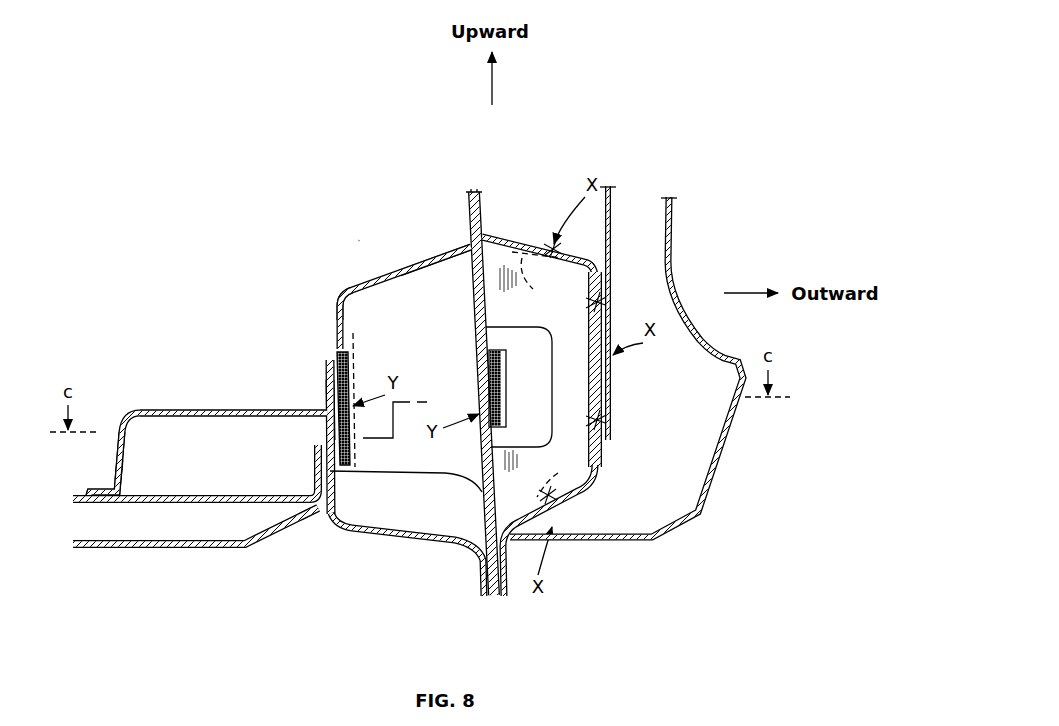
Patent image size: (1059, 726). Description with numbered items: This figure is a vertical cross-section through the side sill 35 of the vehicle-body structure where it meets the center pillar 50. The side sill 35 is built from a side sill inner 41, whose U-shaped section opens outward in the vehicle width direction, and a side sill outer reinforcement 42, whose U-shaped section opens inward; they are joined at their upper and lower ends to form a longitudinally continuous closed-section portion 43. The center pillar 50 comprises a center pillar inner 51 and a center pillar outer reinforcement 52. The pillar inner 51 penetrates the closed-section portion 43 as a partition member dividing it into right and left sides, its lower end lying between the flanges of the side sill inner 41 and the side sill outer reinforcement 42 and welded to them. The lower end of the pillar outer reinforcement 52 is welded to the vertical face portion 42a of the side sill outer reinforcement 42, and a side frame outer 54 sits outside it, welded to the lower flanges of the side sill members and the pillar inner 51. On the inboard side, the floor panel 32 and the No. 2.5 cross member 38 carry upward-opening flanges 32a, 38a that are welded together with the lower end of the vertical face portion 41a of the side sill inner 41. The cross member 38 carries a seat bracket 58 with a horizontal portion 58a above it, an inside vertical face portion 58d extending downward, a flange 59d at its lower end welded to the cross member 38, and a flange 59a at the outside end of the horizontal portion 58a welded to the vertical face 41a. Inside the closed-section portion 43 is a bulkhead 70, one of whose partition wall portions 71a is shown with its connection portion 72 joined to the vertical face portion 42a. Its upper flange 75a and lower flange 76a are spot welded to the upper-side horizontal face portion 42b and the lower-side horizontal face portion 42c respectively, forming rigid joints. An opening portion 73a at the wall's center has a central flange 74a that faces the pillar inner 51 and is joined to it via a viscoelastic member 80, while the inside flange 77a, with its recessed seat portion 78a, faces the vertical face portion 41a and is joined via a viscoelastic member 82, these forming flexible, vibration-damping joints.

The floor panel 32 is at (195, 515).
The flange 32a is at (315, 437).
The side sill 35 is at (357, 238).
The No. 2.5 cross member 38 is at (182, 472).
The flange 38a is at (313, 460).
The side sill inner 41 is at (363, 282).
The vertical face portion 41a is at (337, 300).
The side sill outer reinforcement 42 is at (583, 366).
The vertical face portion 42a is at (640, 372).
The upper-side horizontal face portion 42b is at (528, 242).
The lower-side horizontal face portion 42c is at (552, 496).
The closed-section portion 43 is at (420, 285).
The center pillar 50 is at (626, 339).
The center pillar inner 51 is at (473, 300).
The center pillar outer reinforcement 52 is at (621, 198).
The side frame outer 54 is at (674, 247).
The seat bracket 58 is at (202, 418).
The horizontal portion 58a is at (222, 410).
The inside vertical face portion 58d is at (127, 465).
The flange 59a is at (293, 419).
The flange 59d is at (103, 490).
The bulkhead 70 is at (407, 533).
The partition wall portion 71a is at (390, 474).
The connection portion 72 is at (603, 380).
The opening portion 73a is at (486, 337).
The central flange 74a is at (506, 380).
The upper flange 75a is at (537, 280).
The lower flange 76a is at (545, 474).
The inside flange 77a is at (348, 398).
The seat portion 78a is at (340, 352).
The viscoelastic member 80 is at (489, 380).
The viscoelastic member 82 is at (334, 410).